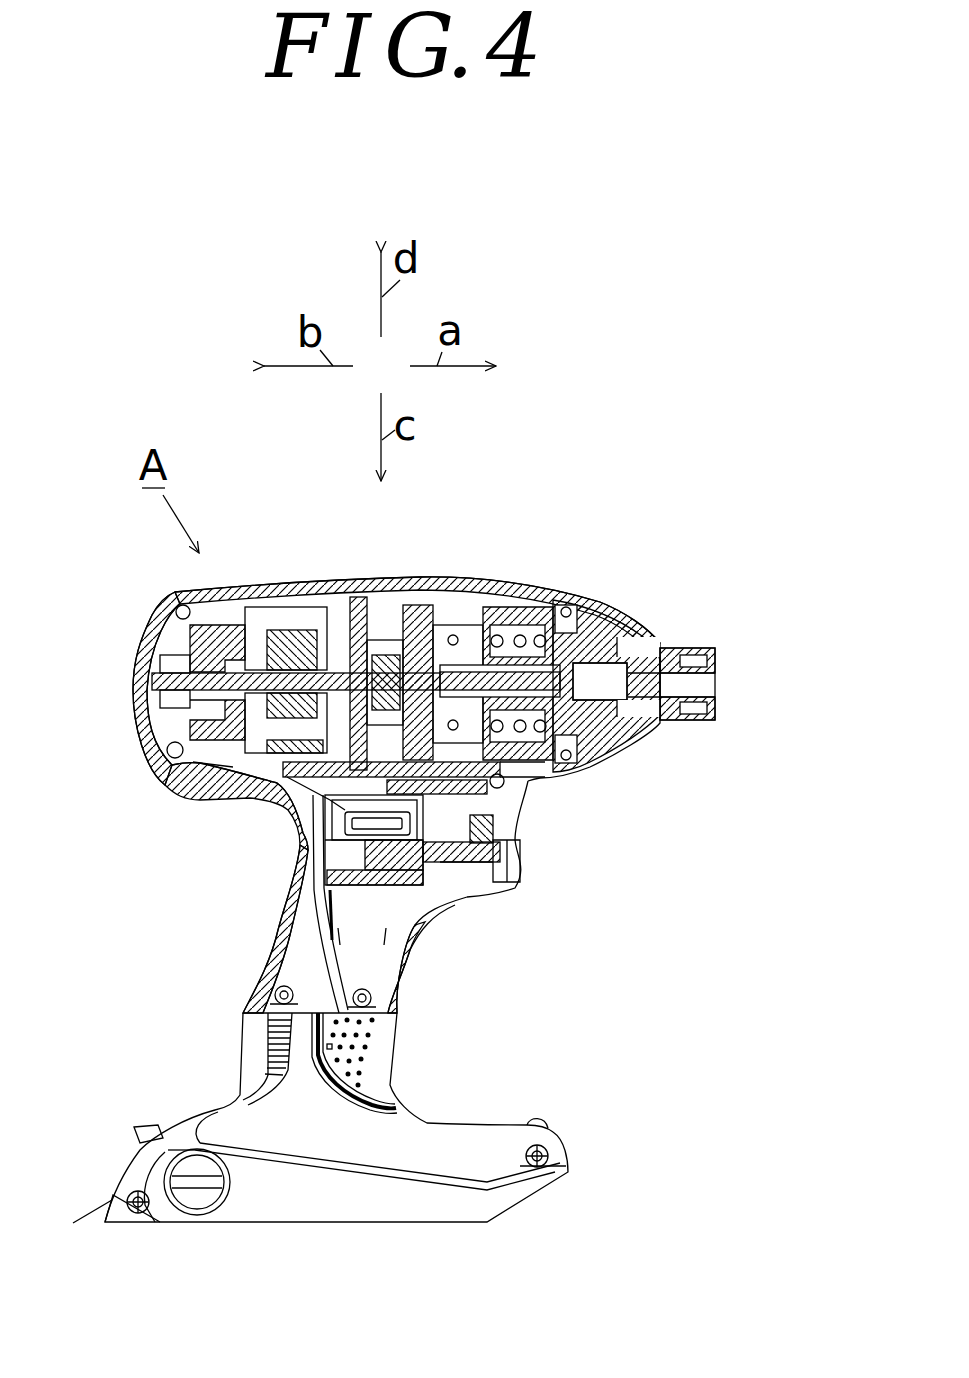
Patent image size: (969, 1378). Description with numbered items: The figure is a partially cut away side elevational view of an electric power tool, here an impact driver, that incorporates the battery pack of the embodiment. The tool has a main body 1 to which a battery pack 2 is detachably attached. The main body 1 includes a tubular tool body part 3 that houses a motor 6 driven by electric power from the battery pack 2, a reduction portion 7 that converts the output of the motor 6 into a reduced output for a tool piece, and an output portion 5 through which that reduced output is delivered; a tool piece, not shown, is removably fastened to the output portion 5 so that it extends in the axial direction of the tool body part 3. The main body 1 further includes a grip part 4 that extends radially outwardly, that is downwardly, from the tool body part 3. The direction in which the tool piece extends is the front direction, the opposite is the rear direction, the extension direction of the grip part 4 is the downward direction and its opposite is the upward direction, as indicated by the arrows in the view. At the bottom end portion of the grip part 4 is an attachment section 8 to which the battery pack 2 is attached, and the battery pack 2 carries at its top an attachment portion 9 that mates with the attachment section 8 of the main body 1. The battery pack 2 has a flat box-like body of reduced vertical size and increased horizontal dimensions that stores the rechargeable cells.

The main body 1 is at (413, 903).
The battery pack 2 is at (296, 1195).
The tubular tool body part 3 is at (575, 602).
The grip part 4 is at (292, 948).
The output portion 5 is at (703, 652).
The motor 6 is at (282, 663).
The reduction portion 7 is at (453, 640).
The attachment section 8 is at (430, 1170).
The attachment portion 9 is at (366, 1172).